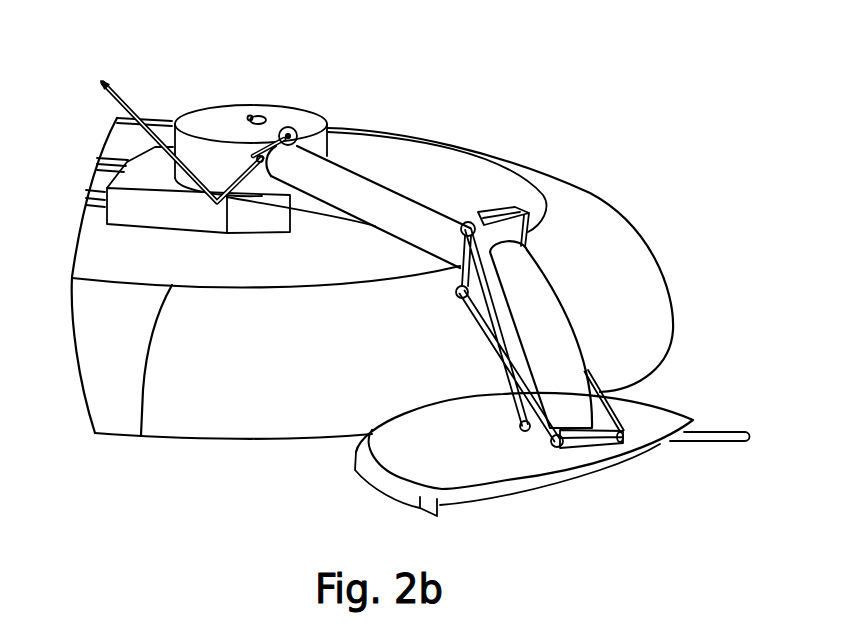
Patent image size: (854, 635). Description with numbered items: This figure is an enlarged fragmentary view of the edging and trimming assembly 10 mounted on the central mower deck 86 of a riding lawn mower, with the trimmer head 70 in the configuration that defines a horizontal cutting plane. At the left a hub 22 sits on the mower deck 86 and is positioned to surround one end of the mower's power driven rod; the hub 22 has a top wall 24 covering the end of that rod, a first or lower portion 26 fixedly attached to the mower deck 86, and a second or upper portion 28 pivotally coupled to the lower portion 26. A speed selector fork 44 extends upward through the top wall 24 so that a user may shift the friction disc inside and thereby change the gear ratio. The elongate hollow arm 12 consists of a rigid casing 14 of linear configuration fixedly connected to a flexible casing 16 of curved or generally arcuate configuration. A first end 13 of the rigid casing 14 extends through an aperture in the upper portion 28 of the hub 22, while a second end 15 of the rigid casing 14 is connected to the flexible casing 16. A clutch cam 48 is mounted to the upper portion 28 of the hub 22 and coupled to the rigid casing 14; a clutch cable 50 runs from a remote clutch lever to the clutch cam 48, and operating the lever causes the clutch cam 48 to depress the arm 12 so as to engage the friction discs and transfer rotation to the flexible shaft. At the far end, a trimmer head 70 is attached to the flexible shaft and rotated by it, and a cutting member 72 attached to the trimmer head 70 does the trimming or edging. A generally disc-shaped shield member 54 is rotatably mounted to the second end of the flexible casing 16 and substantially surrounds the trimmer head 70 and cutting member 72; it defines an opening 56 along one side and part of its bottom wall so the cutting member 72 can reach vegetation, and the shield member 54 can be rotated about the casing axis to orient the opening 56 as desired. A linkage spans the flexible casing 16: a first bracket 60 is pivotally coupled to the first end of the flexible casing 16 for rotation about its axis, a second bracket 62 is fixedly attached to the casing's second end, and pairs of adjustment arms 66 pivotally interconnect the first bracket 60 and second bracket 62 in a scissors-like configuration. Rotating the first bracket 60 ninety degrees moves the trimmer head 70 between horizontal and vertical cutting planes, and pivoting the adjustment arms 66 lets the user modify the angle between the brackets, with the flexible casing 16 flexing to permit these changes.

The edging and trimming assembly 10 is at (512, 62).
The elongate hollow arm 12 is at (381, 188).
The first end of the rigid casing 13 is at (280, 178).
The rigid casing 14 is at (396, 215).
The second end of the rigid casing 15 is at (403, 242).
The flexible casing 16 is at (561, 326).
The hub 22 is at (257, 117).
The top wall 24 is at (212, 103).
The first/lower portion 26 is at (137, 218).
The second/upper portion 28 is at (345, 153).
The speed selector fork 44 is at (263, 114).
The clutch cam 48 is at (296, 131).
The clutch cable 50 is at (126, 97).
The shield member 54 is at (673, 400).
The opening 56 is at (510, 480).
The first bracket 60 is at (515, 210).
The second bracket 62 is at (600, 447).
The adjustment arms 66 is at (465, 322).
The trimmer head 70 is at (580, 488).
The cutting member 72 is at (733, 430).
The mower deck 86 is at (77, 338).